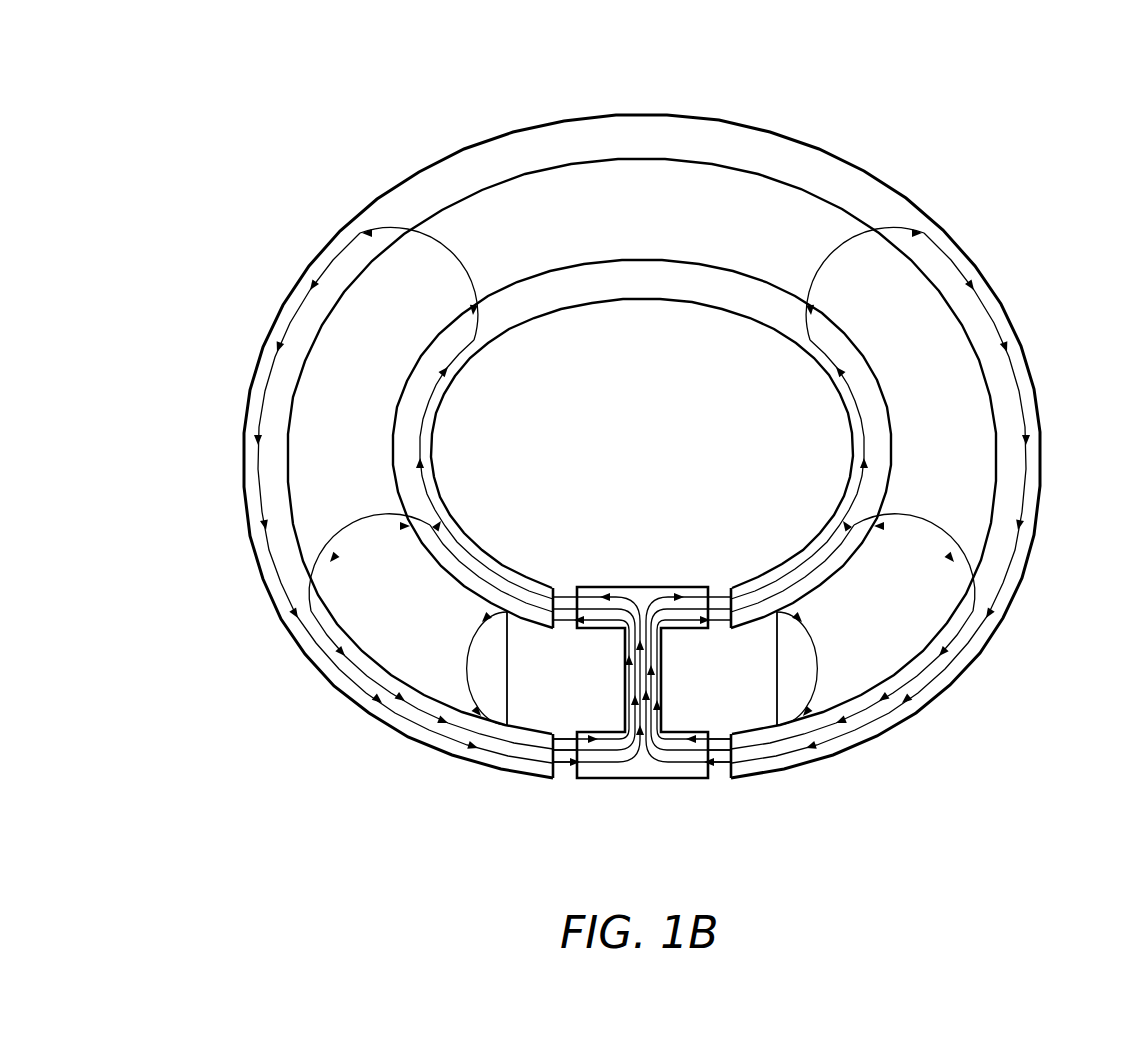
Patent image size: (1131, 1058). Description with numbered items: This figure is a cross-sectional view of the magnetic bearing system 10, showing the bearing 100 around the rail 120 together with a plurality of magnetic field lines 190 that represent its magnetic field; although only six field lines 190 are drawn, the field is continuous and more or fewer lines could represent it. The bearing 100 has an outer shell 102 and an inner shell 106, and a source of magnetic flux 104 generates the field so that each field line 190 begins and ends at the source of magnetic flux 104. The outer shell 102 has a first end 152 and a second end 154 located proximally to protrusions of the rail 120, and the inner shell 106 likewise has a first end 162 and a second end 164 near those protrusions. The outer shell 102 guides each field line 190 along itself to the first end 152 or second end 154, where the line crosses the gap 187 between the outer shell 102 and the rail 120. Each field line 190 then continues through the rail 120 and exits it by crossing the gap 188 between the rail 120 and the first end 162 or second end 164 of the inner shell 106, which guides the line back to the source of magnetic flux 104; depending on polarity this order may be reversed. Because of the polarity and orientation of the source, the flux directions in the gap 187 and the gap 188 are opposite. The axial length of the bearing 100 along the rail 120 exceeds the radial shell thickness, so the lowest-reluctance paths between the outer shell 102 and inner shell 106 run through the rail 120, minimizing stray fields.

The magnetic actuator system 10 is at (198, 140).
The bearing 100 is at (857, 162).
The outer shell 102 is at (473, 157).
The source of magnetic flux 104 is at (640, 173).
The inner shell 106 is at (648, 298).
The rail 120 is at (642, 585).
The first end 152 is at (490, 772).
The second end 154 is at (787, 772).
The first end 162 is at (522, 580).
The second end 164 is at (760, 583).
The gap 187 is at (563, 797).
The gap 188 is at (568, 576).
The magnetic field lines 190 is at (387, 225).